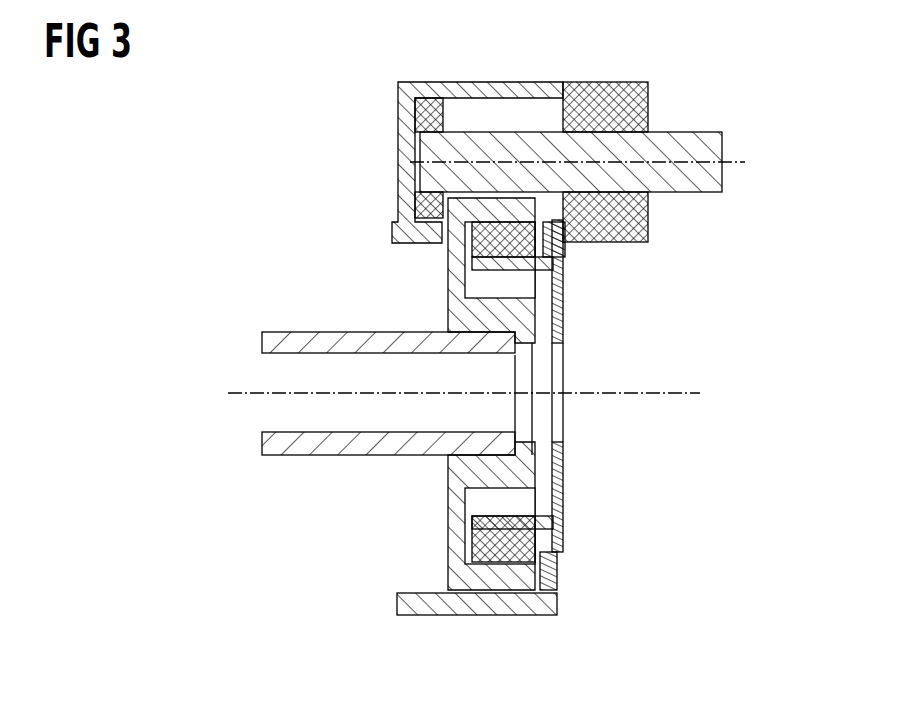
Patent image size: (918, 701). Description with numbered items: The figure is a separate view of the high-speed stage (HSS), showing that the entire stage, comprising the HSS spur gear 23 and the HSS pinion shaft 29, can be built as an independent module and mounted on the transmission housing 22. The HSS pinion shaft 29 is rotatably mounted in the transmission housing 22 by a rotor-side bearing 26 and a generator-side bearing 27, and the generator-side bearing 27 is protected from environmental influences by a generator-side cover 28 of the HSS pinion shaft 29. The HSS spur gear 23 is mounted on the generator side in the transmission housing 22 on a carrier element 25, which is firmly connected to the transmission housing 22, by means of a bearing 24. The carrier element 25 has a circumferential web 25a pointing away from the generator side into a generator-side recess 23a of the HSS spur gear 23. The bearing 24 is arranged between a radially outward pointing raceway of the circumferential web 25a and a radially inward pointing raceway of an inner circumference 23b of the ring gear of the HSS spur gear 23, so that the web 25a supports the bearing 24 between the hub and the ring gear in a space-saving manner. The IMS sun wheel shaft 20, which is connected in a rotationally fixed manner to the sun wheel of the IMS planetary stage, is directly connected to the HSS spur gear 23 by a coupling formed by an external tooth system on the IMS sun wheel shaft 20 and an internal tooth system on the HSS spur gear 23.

The IMS sun wheel shaft 20 is at (291, 343).
The transmission housing 22 is at (518, 618).
The HSS spur gear 23 is at (543, 571).
The generator-side recess 23a is at (491, 295).
The inner circumference of ring gear 23b is at (448, 559).
The bearing 24 is at (463, 259).
The carrier element 25 is at (563, 453).
The circumferential web 25a is at (448, 490).
The rotor-side bearing 26 is at (432, 100).
The generator-side bearing 27 is at (611, 82).
The generator-side cover 28 is at (648, 100).
The HSS pinion shaft 29 is at (722, 141).